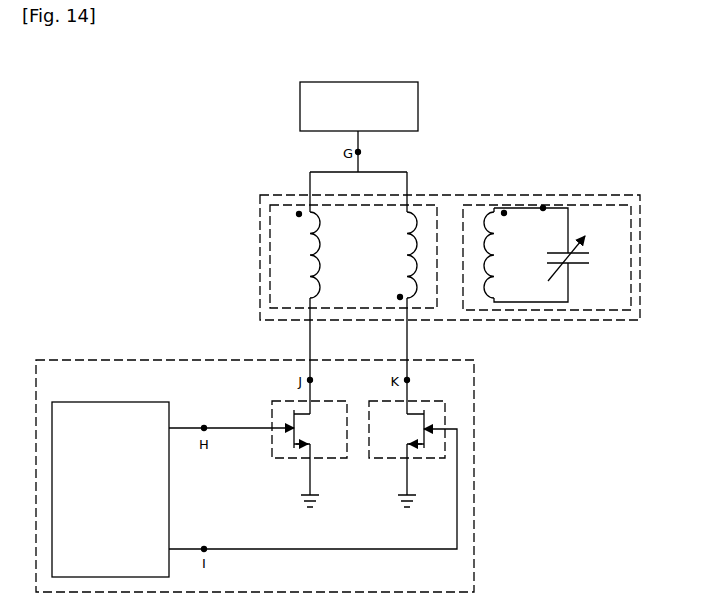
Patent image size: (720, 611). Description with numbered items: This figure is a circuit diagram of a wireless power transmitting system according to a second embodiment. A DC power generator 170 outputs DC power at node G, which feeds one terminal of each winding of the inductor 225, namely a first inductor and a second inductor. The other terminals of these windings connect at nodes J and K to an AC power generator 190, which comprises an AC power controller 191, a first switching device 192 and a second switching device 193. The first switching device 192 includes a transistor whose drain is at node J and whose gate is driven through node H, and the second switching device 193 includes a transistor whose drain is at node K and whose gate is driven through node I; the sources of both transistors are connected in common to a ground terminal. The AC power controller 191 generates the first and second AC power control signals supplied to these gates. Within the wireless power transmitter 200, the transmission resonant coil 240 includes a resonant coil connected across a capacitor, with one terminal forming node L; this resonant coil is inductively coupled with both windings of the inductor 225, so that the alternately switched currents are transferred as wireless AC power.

The DC power generator 170 is at (359, 80).
The AC power generator 190 is at (55, 358).
The AC power controller 191 is at (129, 400).
The first switching device 192 is at (283, 400).
The second switching device 193 is at (438, 400).
The wireless power transmitter 200 is at (551, 321).
The inductor 225 is at (425, 204).
The transmission resonant coil 240 is at (583, 194).